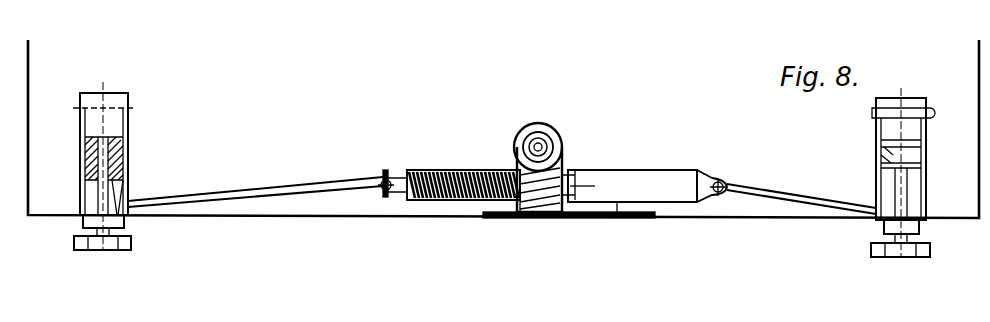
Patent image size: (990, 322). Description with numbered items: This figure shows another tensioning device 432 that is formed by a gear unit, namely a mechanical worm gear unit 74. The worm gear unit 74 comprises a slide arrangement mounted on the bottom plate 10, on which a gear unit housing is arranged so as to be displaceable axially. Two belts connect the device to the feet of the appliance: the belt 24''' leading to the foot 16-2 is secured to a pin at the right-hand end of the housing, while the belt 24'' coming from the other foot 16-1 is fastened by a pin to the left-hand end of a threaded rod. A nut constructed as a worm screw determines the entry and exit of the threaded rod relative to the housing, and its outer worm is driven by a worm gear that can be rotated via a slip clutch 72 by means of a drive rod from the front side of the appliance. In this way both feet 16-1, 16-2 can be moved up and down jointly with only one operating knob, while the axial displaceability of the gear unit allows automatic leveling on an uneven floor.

The bottom plate 10 is at (333, 220).
The foot 16-1 is at (113, 253).
The foot 16-2 is at (898, 260).
The belt 24'' is at (267, 165).
The belt 24''' is at (801, 173).
The slip clutch 72 is at (483, 246).
The mechanical worm gear unit 74 is at (560, 133).
The tensioning device 432 is at (607, 165).